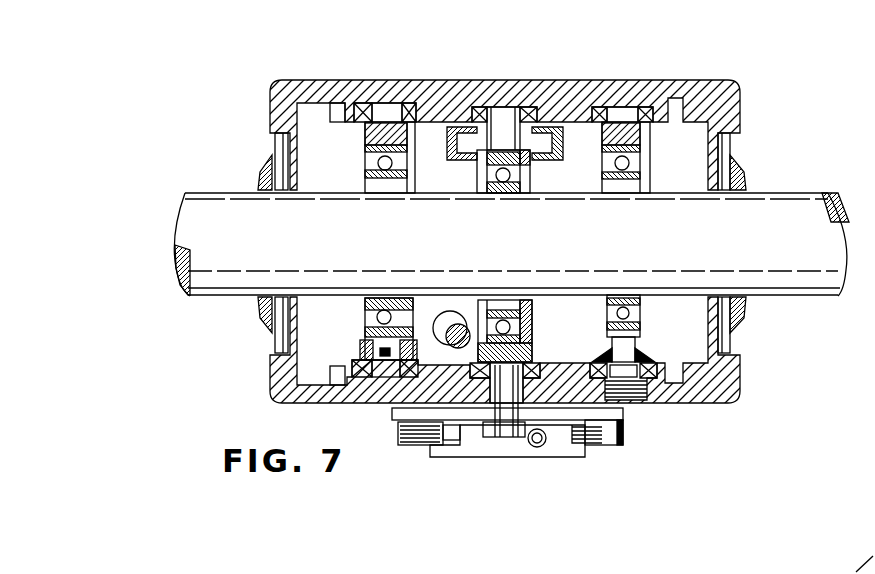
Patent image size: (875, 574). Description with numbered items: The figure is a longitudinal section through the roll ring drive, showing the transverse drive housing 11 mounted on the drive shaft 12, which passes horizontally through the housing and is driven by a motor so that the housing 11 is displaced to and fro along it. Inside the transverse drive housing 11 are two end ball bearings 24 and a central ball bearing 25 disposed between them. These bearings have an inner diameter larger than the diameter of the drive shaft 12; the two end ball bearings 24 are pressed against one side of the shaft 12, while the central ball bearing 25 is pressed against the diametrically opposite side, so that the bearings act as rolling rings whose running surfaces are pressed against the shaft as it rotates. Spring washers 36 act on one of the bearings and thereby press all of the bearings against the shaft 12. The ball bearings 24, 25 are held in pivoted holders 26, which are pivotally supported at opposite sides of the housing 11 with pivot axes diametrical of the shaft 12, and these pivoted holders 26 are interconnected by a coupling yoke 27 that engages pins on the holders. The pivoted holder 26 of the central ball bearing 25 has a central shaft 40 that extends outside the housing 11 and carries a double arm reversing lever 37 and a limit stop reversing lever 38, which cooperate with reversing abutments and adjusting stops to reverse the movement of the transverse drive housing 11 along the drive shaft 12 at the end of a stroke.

The transverse drive housing 11 is at (745, 95).
The drive shaft 12 is at (773, 204).
The end ball bearings 24 is at (367, 177).
The central ball bearing 25 is at (527, 187).
The pivoted holders 26 is at (537, 345).
The coupling yoke 27 is at (448, 127).
The spring washers 36 is at (653, 343).
The double arm reversing lever 37 is at (628, 428).
The limit stop reversing lever 38 is at (505, 437).
The central shaft 40 is at (490, 408).